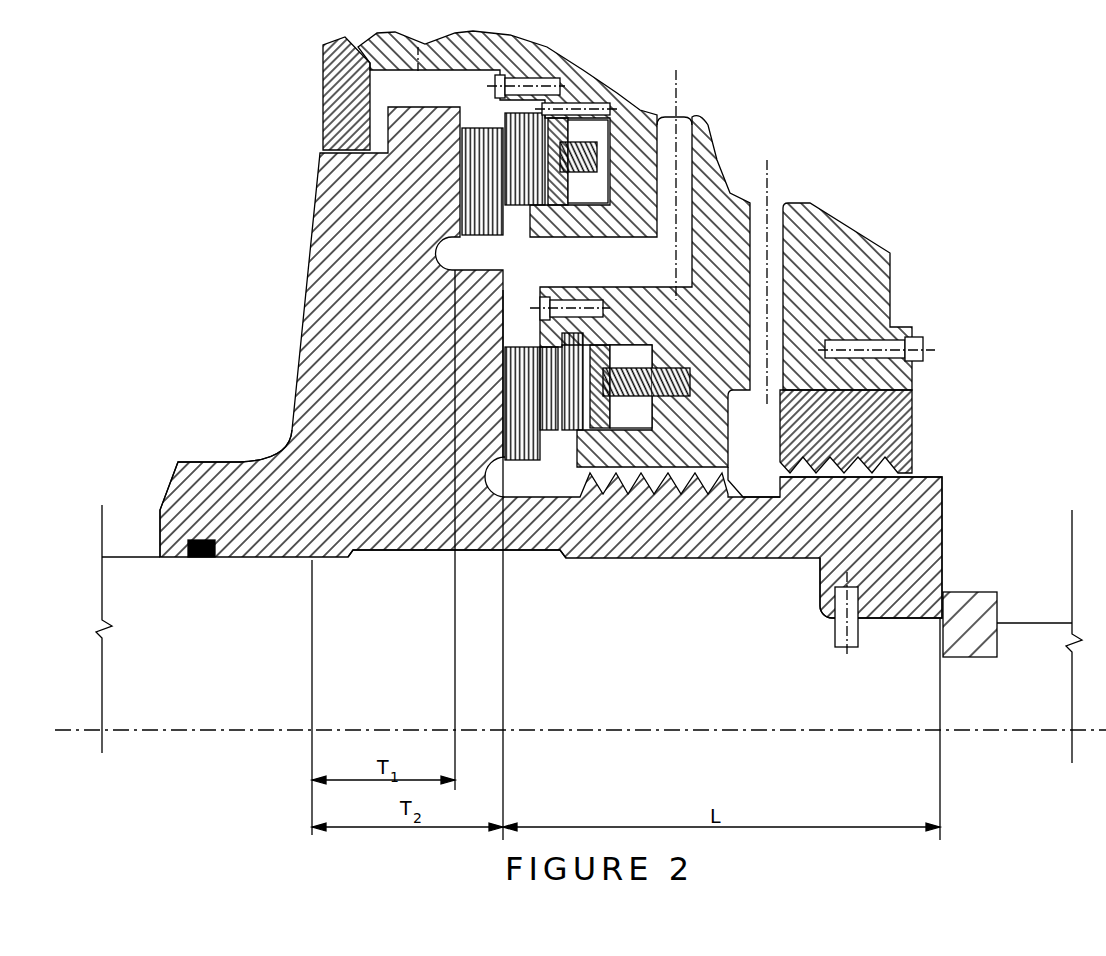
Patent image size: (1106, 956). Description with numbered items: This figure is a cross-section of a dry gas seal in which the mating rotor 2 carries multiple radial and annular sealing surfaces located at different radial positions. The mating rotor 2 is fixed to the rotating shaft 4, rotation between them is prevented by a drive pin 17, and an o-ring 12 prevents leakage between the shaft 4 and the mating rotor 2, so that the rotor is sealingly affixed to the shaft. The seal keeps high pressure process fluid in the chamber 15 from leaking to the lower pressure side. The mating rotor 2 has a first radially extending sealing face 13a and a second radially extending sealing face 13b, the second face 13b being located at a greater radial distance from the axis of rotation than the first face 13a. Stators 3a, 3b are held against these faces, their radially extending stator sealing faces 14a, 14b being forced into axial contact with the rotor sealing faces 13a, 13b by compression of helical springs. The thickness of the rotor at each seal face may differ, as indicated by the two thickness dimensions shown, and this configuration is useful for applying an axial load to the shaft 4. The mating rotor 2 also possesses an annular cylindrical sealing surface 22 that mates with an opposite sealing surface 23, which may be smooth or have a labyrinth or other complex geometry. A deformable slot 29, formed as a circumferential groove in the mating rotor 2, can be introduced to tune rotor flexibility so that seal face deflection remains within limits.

The mating rotor 2 is at (355, 415).
The stator 3a is at (527, 380).
The stator 3b is at (545, 172).
The rotating shaft 4 is at (325, 608).
The o-ring 12 is at (188, 543).
The first radially extending sealing face 13a is at (503, 408).
The second radially extending sealing face 13b is at (545, 160).
The stator sealing face 14a is at (515, 460).
The stator sealing face 14b is at (458, 178).
The high pressure chamber 15 is at (184, 262).
The drive pin 17 is at (892, 583).
The annular cylindrical sealing surface 22 is at (910, 470).
The opposite sealing surface 23 is at (323, 95).
The deformable slot 29 is at (417, 553).